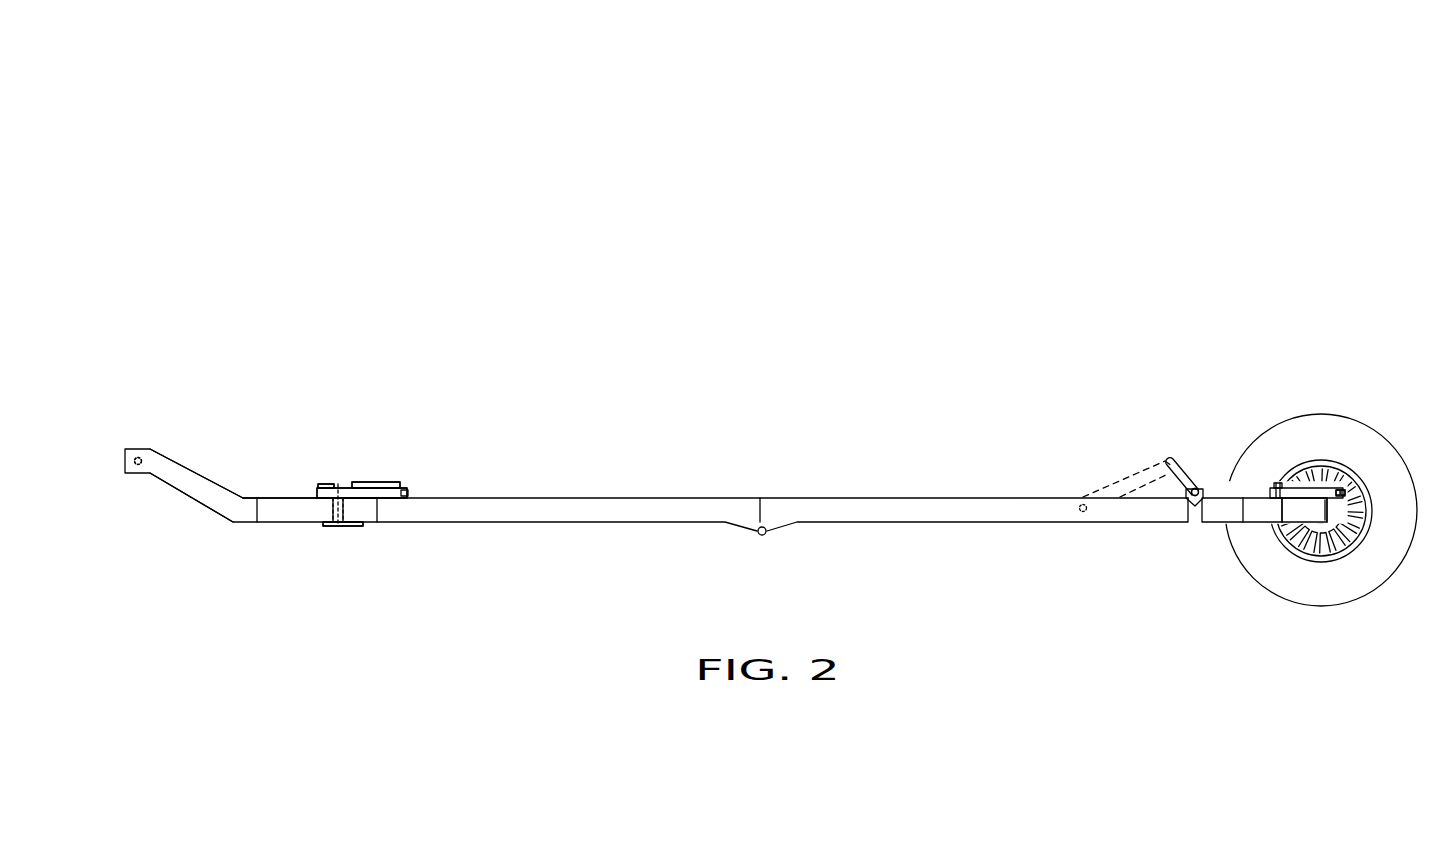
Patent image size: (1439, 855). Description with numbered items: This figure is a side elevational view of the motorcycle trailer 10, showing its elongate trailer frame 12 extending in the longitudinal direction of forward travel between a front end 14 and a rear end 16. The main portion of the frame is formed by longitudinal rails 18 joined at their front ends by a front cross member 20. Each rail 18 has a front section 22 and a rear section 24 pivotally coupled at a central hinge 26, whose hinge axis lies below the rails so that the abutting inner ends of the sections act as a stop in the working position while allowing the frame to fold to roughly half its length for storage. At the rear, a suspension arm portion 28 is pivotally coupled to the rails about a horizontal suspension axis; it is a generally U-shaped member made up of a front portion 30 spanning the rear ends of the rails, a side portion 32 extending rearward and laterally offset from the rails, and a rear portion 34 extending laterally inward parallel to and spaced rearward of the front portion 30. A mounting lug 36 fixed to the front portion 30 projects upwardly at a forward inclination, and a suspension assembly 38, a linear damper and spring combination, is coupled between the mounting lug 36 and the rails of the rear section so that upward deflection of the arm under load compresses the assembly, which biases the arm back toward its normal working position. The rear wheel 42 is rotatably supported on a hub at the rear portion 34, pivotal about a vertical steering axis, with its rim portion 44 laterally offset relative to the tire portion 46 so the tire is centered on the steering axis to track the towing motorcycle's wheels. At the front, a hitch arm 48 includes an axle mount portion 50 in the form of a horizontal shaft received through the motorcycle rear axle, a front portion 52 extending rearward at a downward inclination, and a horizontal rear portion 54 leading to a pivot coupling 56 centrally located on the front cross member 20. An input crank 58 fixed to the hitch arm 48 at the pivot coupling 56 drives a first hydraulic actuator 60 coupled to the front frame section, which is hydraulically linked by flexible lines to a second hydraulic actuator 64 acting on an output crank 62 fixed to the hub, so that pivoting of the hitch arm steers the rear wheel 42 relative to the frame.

The motorcycle trailer 10 is at (818, 205).
The trailer frame 12 is at (557, 523).
The front end 14 is at (268, 316).
The rear end 16 is at (1280, 328).
The rail 18 is at (502, 497).
The front cross member 20 is at (363, 510).
The front section 22 is at (610, 512).
The rear section 24 is at (938, 510).
The central hinge 26 is at (762, 535).
The suspension arm portion 28 is at (1212, 573).
The front portion 30 is at (1213, 515).
The side portion 32 is at (1257, 513).
The rear portion 34 is at (1297, 513).
The mounting lug 36 is at (1186, 485).
The suspension assembly 38 is at (1113, 482).
The rear wheel 42 is at (1332, 390).
The rim portion 44 is at (1295, 490).
The tire portion 46 is at (1358, 433).
The hitch arm 48 is at (218, 556).
The axle mount portion 50 is at (133, 464).
The front portion 52 is at (185, 478).
The rear portion 54 is at (285, 510).
The pivot coupling 56 is at (323, 507).
The input crank 58 is at (327, 487).
The first hydraulic actuator 60 is at (372, 483).
The output crank 62 is at (1330, 505).
The second hydraulic actuator 64 is at (1305, 487).